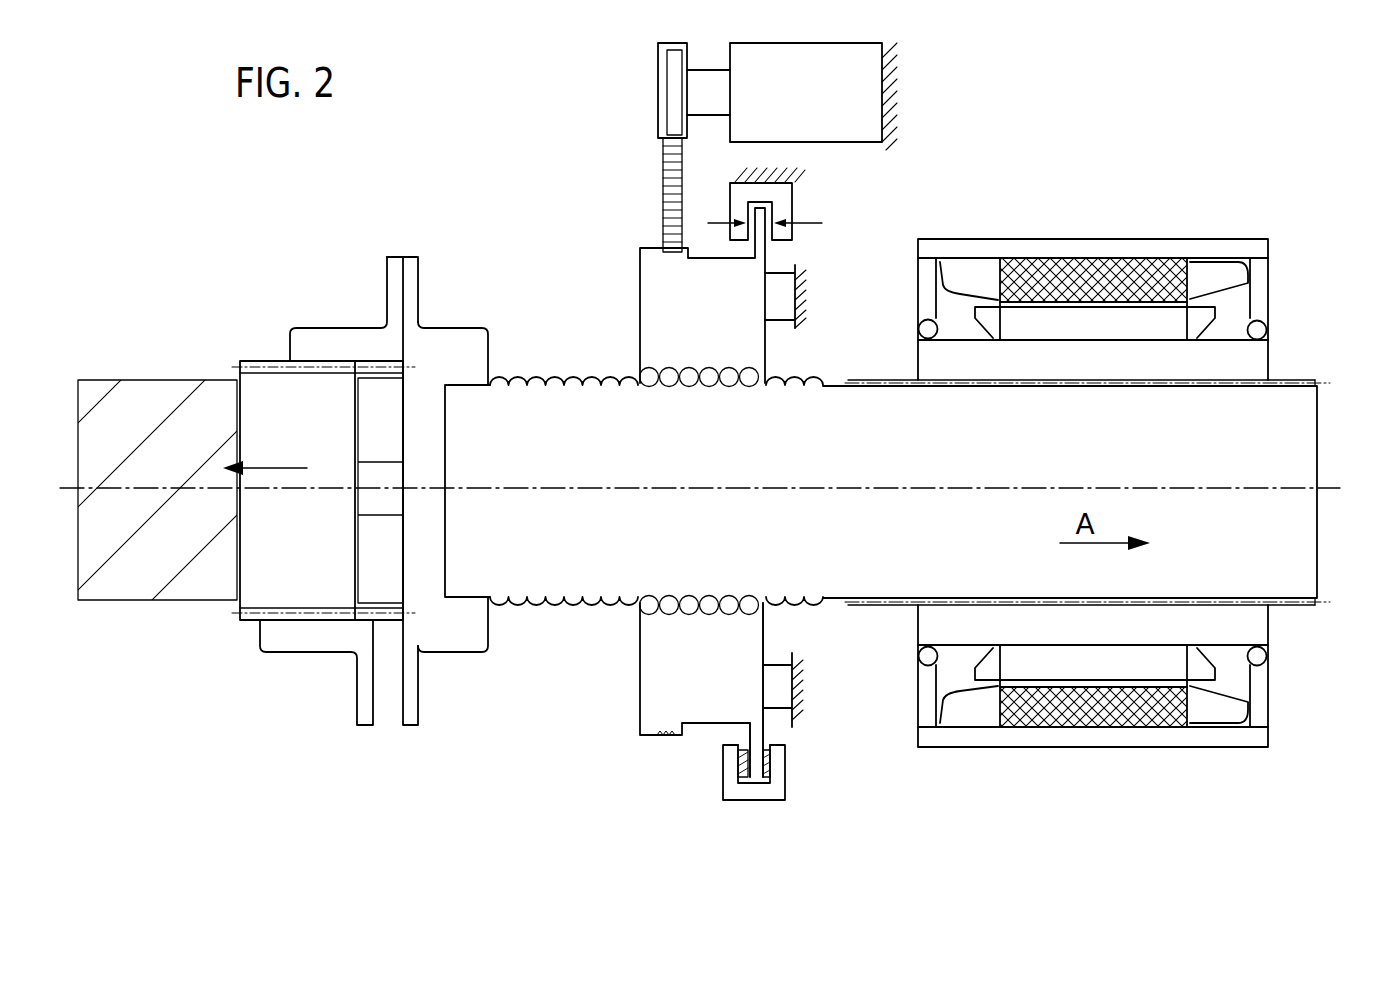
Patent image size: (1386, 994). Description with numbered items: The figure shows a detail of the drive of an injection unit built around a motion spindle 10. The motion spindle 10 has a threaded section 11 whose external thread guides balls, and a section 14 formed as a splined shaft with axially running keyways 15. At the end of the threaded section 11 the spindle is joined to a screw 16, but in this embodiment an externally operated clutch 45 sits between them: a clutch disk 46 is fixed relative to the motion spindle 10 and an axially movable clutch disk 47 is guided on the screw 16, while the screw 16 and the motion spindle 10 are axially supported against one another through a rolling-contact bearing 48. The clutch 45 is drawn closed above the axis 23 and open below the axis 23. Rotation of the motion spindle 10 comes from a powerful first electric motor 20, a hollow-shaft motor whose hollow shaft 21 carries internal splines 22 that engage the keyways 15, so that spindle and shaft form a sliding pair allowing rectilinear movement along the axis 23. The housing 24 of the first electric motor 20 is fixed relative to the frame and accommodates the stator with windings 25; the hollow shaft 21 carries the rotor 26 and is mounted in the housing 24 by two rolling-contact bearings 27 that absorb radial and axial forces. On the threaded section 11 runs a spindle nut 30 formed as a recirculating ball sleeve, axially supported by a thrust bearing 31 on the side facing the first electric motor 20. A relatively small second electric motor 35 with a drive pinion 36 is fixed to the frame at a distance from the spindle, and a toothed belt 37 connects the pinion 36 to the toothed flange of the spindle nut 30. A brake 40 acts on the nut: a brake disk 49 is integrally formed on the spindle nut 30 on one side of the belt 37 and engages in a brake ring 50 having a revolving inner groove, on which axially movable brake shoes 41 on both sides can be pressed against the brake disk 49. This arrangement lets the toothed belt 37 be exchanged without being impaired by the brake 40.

The motion spindle 10 is at (868, 340).
The threaded section 11 is at (772, 445).
The splined-shaft section 14 is at (1277, 438).
The keyways 15 is at (1288, 607).
The screw 16 is at (162, 407).
The first electric motor 20 is at (1226, 216).
The hollow shaft 21 is at (1080, 625).
The splines 22 is at (1203, 607).
The axis 23 is at (1333, 475).
The housing 24 is at (997, 250).
The windings 25 is at (1210, 273).
The rotor 26 is at (1103, 327).
The rolling-contact bearings 27 is at (920, 662).
The spindle nut 30 is at (663, 668).
The thrust bearing 31 is at (790, 290).
The second electric motor 35 is at (838, 65).
The drive pinion 36 is at (672, 72).
The toothed belt 37 is at (670, 183).
The brake 40 is at (797, 821).
The brake shoes 41 is at (737, 762).
The externally operated clutch 45 is at (415, 225).
The clutch disk 46 is at (473, 348).
The axially movable clutch disk 47 is at (308, 342).
The rolling-contact bearing 48 is at (392, 582).
The brake disk 49 is at (755, 780).
The brake ring 50 is at (728, 788).